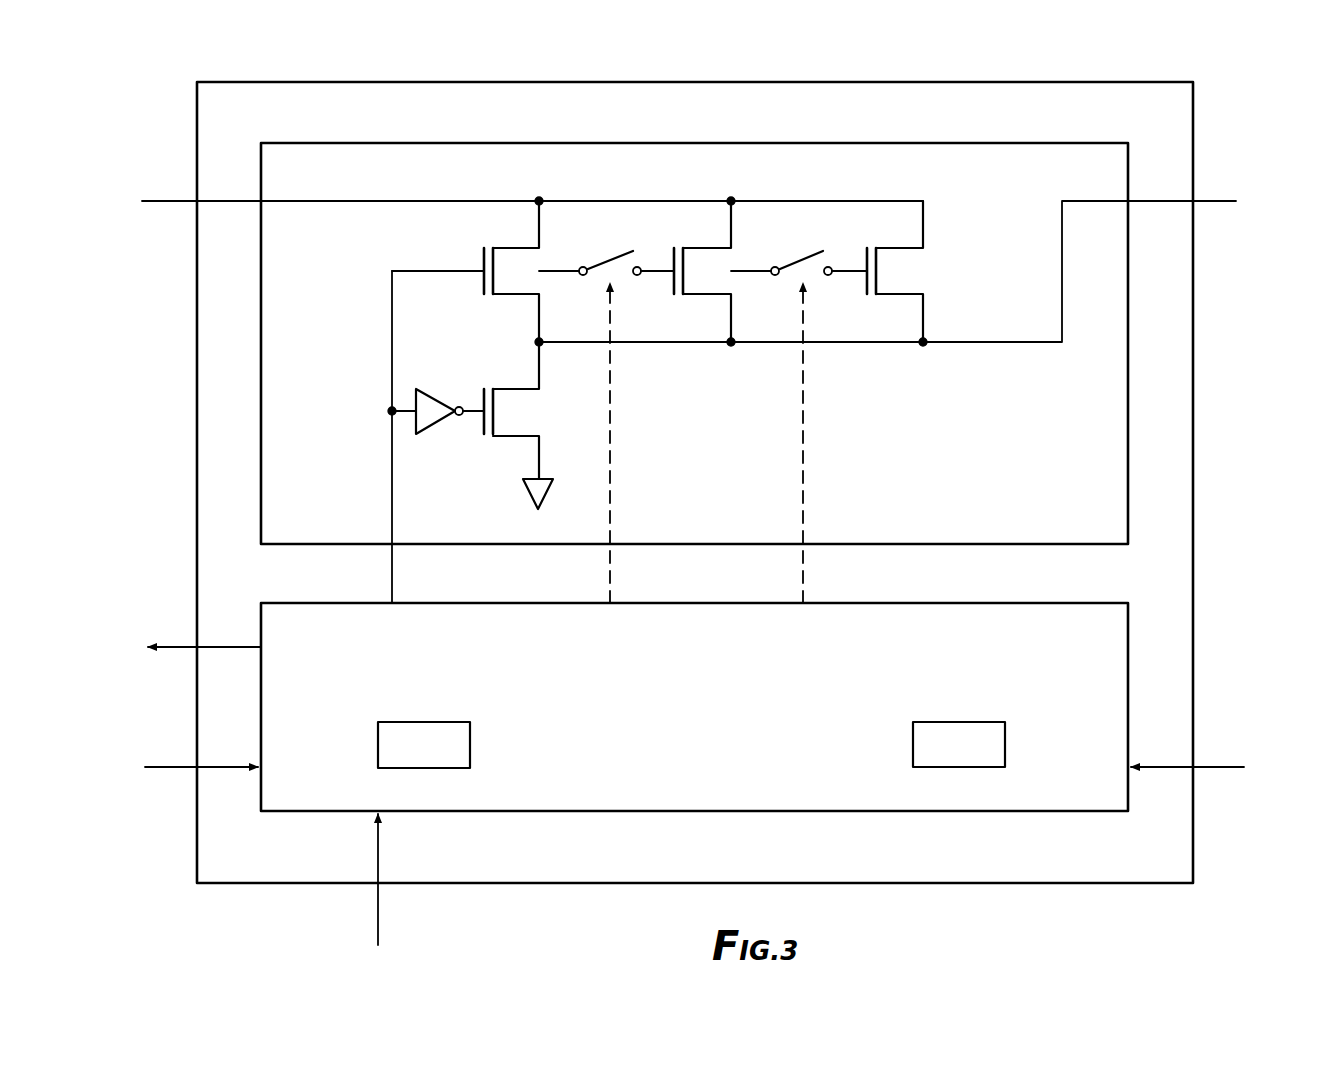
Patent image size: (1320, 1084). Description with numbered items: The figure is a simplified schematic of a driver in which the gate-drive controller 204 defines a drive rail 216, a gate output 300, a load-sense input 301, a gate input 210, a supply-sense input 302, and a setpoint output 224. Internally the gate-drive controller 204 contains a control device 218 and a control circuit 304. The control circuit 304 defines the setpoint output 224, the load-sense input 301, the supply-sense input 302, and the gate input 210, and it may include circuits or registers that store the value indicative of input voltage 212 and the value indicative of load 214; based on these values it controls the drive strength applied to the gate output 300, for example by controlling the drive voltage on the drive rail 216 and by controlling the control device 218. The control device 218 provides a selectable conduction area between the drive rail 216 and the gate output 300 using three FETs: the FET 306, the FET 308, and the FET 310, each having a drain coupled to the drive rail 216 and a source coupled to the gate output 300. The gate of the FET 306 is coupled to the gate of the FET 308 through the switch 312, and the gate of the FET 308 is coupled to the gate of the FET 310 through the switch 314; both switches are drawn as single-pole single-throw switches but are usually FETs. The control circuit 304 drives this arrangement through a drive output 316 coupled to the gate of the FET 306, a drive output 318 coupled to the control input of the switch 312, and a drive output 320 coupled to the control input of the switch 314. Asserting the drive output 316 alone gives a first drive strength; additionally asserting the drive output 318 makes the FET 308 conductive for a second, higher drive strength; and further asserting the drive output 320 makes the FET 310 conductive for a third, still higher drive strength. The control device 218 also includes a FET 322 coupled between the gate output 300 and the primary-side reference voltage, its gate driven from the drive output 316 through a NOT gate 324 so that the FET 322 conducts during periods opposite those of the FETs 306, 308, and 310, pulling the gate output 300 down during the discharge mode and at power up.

The gate-drive controller 204 is at (197, 80).
The control device 218 is at (523, 143).
The control circuit 304 is at (294, 602).
The value indicative of input voltage 212 is at (444, 758).
The value indicative of load 214 is at (979, 757).
The drive rail 216 is at (197, 201).
The gate output 300 is at (1193, 201).
The FET 306 is at (512, 228).
The FET 308 is at (690, 233).
The FET 310 is at (892, 240).
The switch 312 is at (614, 245).
The switch 314 is at (795, 240).
The drive output 316 is at (392, 603).
The drive output 318 is at (610, 603).
The drive output 320 is at (803, 603).
The FET 322 is at (487, 446).
The NOT gate 324 is at (441, 386).
The setpoint output 224 is at (192, 647).
The supply-sense input 302 is at (195, 767).
The load-sense input 301 is at (1193, 767).
The gate input 210 is at (378, 883).